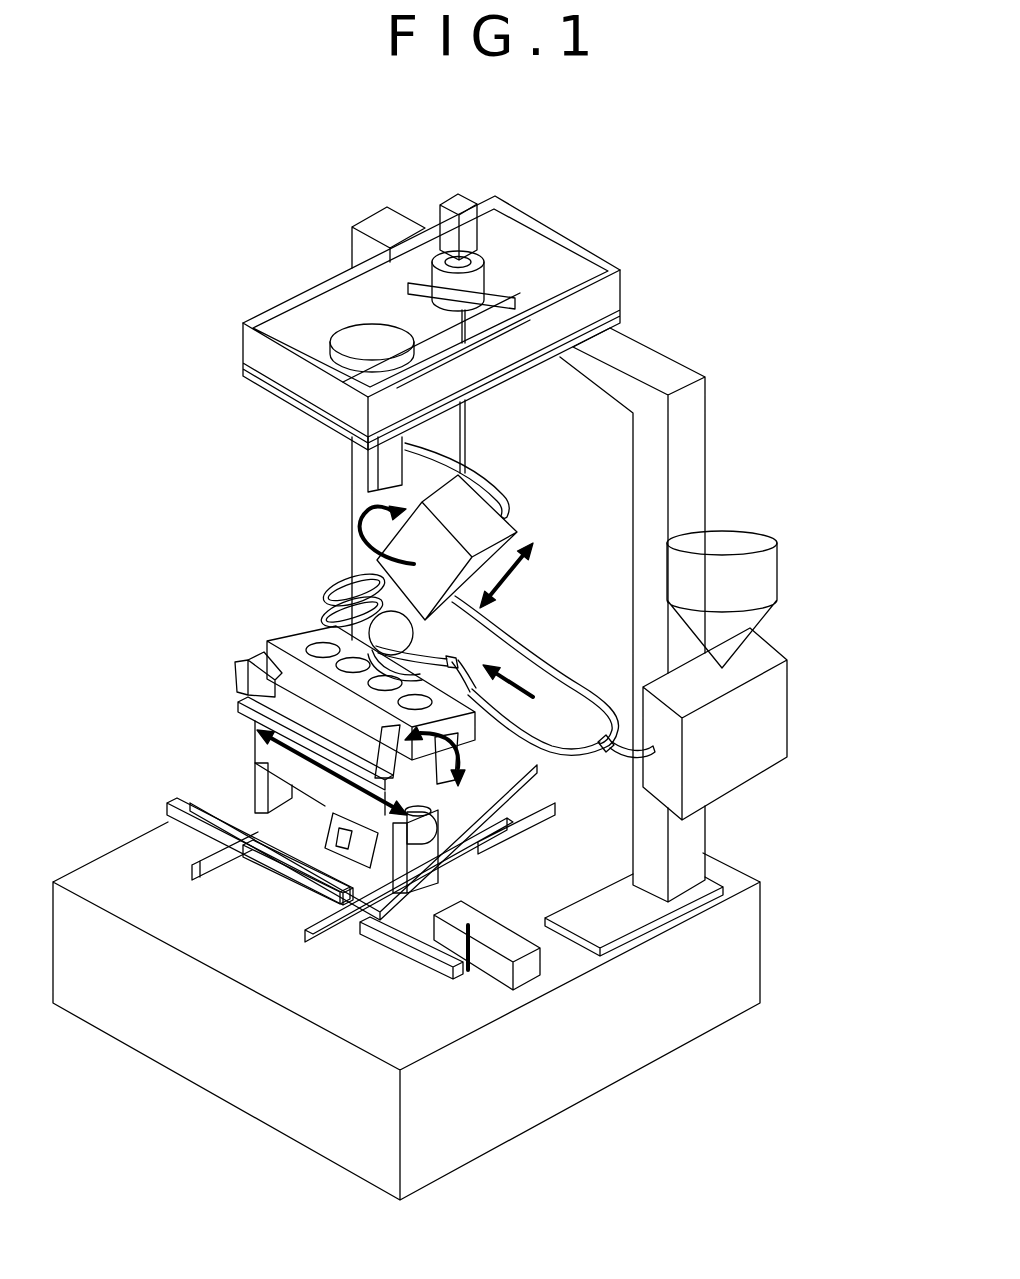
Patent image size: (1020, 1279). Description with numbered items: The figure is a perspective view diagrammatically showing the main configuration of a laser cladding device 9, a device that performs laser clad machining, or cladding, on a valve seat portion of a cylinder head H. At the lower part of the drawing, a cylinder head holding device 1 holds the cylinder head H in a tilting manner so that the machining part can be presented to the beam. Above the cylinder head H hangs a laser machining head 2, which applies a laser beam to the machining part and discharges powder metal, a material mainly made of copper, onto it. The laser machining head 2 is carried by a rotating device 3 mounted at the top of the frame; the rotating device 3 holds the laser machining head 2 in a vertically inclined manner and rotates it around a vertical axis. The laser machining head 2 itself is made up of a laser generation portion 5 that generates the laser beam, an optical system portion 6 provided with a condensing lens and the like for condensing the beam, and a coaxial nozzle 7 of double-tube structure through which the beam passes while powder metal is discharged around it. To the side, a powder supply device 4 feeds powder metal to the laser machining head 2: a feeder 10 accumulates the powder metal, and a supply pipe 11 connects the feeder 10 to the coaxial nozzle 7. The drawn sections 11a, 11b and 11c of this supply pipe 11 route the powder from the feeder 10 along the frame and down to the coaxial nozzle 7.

The cylinder head holding device 1 is at (214, 744).
The laser machining head 2 is at (413, 543).
The rotating device 3 is at (242, 286).
The powder supply device 4 is at (765, 675).
The laser generation portion 5 is at (513, 520).
The optical system portion 6 is at (413, 634).
The coaxial nozzle 7 is at (327, 618).
The laser cladding device 9 is at (708, 224).
The feeder 10 is at (773, 720).
The supply pipe 11 is at (525, 585).
The pipe connector 11a is at (622, 733).
The pipe section 11b is at (550, 668).
The pipe section 11c is at (497, 636).
The cylinder head H is at (252, 668).